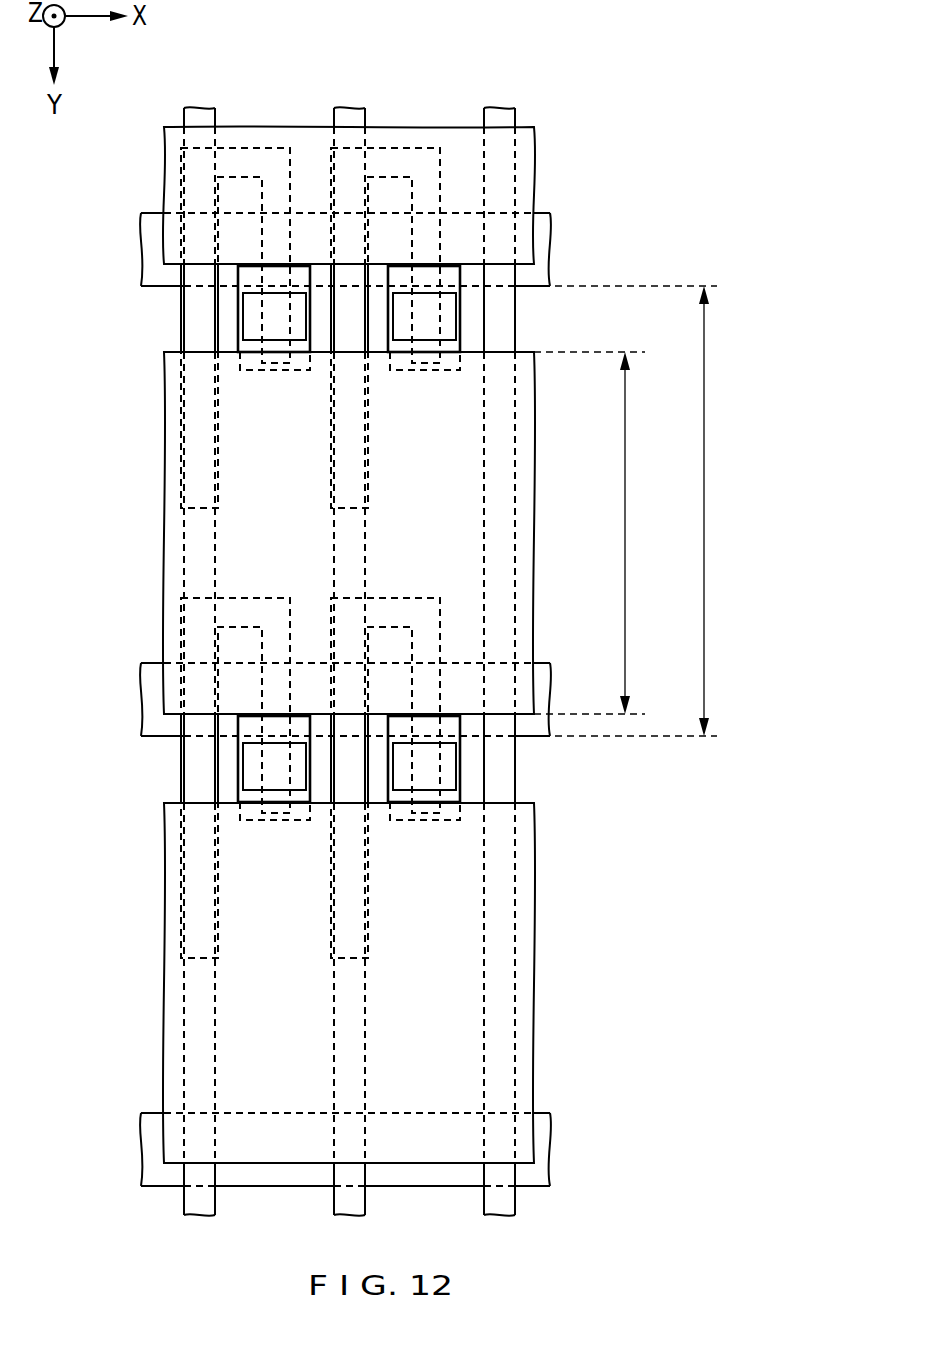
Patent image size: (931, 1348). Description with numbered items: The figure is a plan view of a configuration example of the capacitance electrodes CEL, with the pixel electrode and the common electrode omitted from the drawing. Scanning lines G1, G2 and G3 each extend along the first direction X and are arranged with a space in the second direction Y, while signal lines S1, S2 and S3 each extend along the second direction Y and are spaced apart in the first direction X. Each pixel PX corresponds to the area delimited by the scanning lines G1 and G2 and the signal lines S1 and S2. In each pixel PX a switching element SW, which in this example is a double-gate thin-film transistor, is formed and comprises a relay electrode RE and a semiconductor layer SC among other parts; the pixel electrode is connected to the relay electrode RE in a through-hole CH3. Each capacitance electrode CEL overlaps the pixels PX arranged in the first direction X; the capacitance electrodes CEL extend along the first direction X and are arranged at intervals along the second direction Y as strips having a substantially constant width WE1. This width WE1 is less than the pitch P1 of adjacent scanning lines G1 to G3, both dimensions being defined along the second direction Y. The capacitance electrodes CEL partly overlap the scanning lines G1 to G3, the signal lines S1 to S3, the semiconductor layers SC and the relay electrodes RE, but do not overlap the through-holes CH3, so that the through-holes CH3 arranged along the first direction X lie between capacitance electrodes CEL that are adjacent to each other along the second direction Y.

The pixel PX is at (312, 80).
The switching element SW is at (245, 147).
The semiconductor layer SC is at (275, 163).
The capacitance electrode CEL is at (172, 141).
The signal line S1 is at (199, 122).
The signal line S2 is at (347, 122).
The signal line S3 is at (503, 122).
The scanning line G1 is at (551, 235).
The scanning line G2 is at (551, 675).
The scanning line G3 is at (551, 1125).
The relay electrode RE is at (240, 299).
The through-hole CH3 is at (240, 324).
The width WE1 is at (607, 533).
The pitch P1 is at (646, 511).